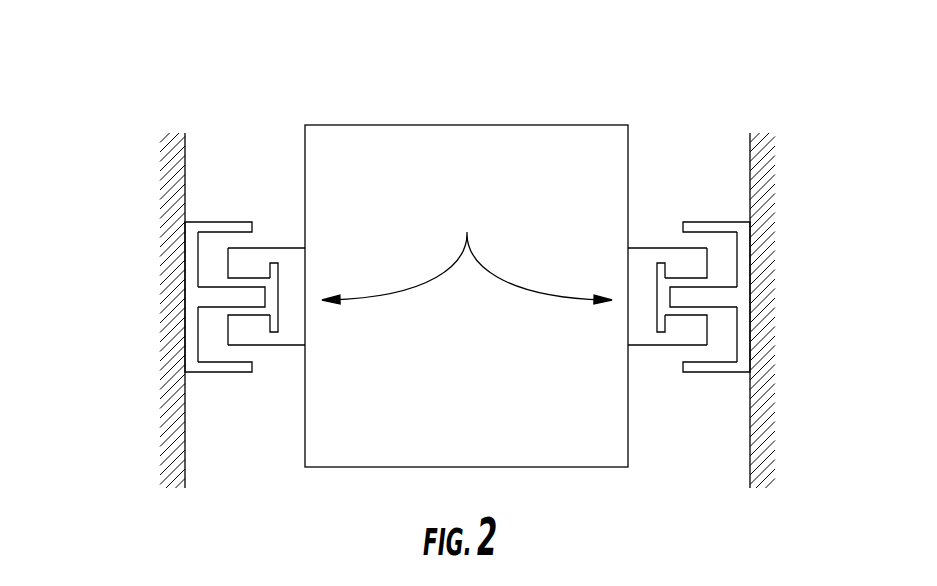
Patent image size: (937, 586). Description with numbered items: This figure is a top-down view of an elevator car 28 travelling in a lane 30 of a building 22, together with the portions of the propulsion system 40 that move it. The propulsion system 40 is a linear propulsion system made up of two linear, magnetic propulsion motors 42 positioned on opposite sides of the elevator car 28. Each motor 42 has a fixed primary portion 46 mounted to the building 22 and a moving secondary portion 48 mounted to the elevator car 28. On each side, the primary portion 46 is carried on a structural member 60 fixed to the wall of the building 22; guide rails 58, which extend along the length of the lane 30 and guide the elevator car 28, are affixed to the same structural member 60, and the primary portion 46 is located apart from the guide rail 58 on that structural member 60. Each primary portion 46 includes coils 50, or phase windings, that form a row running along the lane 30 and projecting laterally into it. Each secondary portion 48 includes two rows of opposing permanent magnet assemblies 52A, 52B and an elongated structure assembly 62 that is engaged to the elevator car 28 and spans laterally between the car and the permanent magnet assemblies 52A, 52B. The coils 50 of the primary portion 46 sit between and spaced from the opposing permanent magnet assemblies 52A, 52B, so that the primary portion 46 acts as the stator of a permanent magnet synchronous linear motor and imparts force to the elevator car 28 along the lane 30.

The building 22 is at (185, 155).
The elevator car 28 is at (500, 125).
The lane 30 is at (240, 466).
The propulsion system 40 is at (793, 117).
The linear propulsion motor 42 is at (110, 210).
The primary portion 46 is at (222, 221).
The secondary portion 48 is at (467, 253).
The coils 50 is at (220, 292).
The permanent magnet assembly 52A is at (256, 268).
The permanent magnet assembly 52B is at (263, 322).
The guide rail 58 is at (245, 222).
The structural member 60 is at (192, 253).
The structure assembly 62 is at (288, 247).